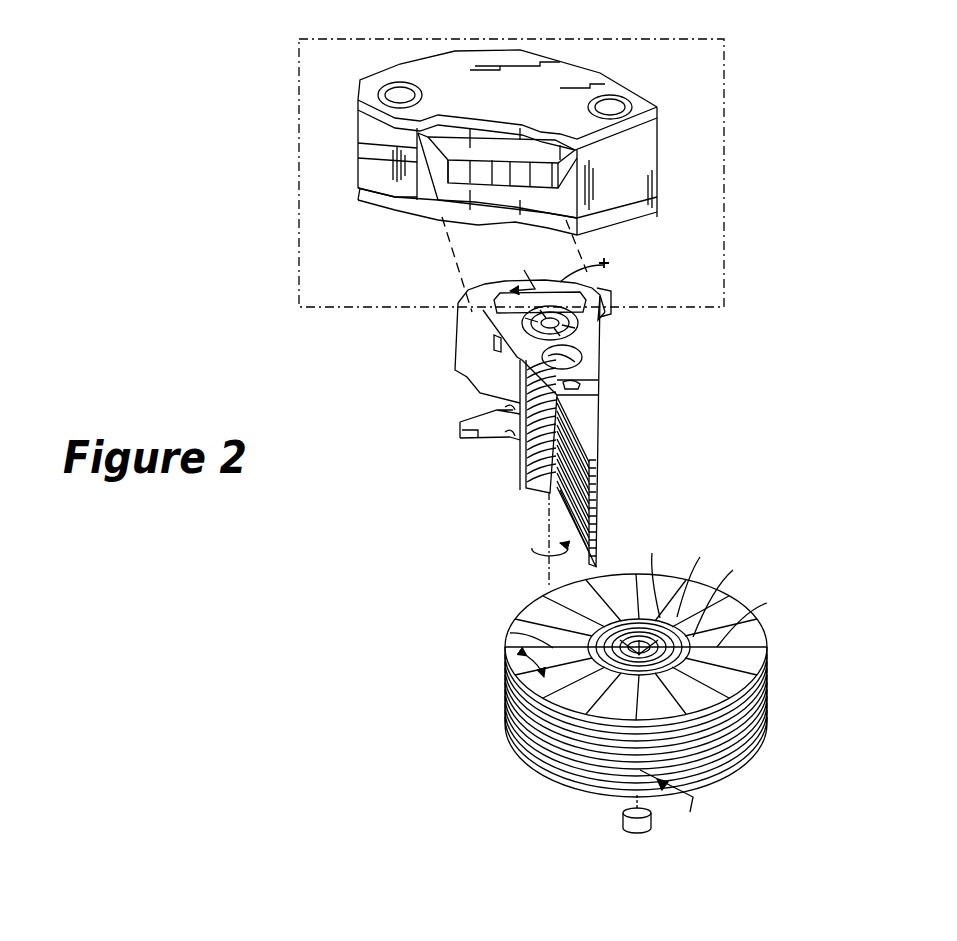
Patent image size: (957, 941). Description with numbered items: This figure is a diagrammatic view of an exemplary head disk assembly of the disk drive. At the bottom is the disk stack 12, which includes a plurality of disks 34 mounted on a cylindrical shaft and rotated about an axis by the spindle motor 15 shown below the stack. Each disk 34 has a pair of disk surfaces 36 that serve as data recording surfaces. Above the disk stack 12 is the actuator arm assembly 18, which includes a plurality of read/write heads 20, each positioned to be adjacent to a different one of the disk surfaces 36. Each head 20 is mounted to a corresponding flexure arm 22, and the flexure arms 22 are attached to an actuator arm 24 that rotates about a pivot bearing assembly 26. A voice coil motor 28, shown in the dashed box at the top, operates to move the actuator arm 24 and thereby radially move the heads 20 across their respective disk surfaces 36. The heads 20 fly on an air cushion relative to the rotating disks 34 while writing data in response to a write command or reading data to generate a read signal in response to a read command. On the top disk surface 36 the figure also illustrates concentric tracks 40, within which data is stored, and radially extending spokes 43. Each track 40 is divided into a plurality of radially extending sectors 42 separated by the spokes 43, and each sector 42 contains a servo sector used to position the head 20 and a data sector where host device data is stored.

The disk stack 12 is at (640, 683).
The spindle motor 15 is at (618, 818).
The actuator arm assembly 18 is at (640, 415).
The read/write head 20 is at (598, 464).
The flexure arm 22 is at (590, 416).
The actuator arm 24 is at (590, 366).
The pivot bearing assembly 26 is at (590, 318).
The voice coil motor 28 is at (727, 163).
The disk 34 is at (673, 803).
The disk surface 36 is at (750, 658).
The track 40 is at (721, 588).
The sector 42 is at (521, 668).
The spoke 43 is at (522, 636).